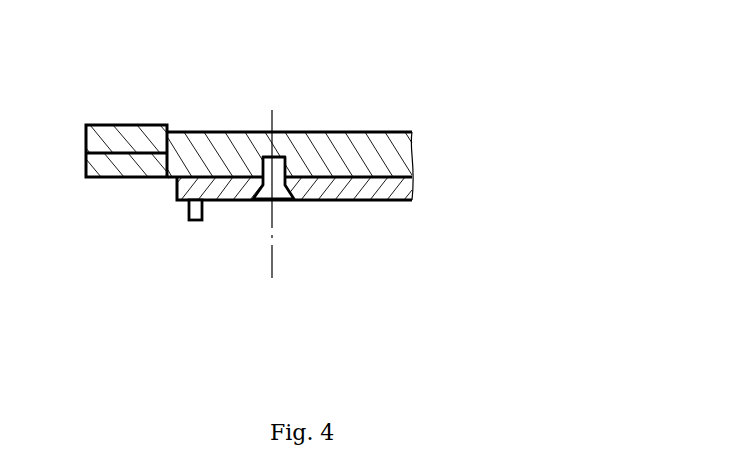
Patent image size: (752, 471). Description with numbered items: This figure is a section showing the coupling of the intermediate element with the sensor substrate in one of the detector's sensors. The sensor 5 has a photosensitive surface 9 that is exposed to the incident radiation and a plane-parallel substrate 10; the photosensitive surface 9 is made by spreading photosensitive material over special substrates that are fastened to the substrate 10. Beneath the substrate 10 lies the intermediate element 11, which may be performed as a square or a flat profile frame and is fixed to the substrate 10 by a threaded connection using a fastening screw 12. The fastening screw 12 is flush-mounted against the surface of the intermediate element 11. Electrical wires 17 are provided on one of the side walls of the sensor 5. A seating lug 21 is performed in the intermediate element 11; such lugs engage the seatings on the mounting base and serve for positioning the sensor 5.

The sensor 5 is at (291, 131).
The photosensitive surface 9 is at (334, 131).
The substrate 10 is at (380, 158).
The intermediate element 11 is at (407, 186).
The fastening screw 12 is at (262, 202).
The electrical wires 17 is at (120, 125).
The seating lug 21 is at (190, 224).